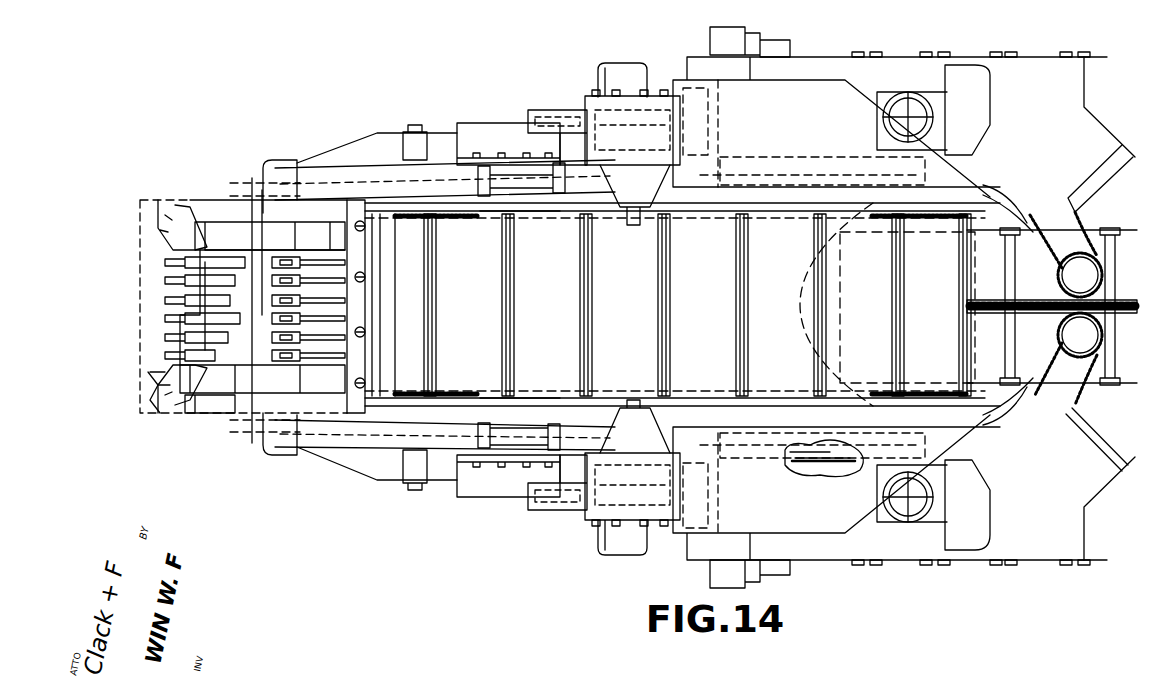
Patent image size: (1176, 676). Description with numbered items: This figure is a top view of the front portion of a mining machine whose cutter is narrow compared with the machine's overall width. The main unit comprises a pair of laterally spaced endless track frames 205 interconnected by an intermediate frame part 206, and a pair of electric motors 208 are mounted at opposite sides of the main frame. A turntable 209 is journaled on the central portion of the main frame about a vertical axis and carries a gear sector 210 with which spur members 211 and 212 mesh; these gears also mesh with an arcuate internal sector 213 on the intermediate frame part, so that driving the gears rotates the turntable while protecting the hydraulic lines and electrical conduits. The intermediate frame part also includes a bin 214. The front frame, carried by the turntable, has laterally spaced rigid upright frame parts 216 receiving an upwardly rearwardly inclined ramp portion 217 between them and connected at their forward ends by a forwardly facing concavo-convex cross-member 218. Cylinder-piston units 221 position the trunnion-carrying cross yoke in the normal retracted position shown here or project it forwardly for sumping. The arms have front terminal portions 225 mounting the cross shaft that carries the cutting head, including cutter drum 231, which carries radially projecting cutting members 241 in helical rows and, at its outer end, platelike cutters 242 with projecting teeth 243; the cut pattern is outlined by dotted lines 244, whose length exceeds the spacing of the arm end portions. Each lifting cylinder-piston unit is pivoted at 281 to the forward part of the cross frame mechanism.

The endless track frames 205 is at (1028, 65).
The intermediate frame part 206 is at (1073, 440).
The electric motors 208 is at (820, 76).
The turntable 209 is at (1030, 250).
The gear sector 210 is at (1048, 388).
The spur member 211 is at (1088, 342).
The spur member 212 is at (1088, 273).
The arcuate internal sector 213 is at (1087, 216).
The bin 214 is at (993, 218).
The upright frame parts 216 is at (533, 202).
The ramp portion 217 is at (563, 317).
The concavo-convex cross-member 218 is at (385, 305).
The cylinder-piston units 221 is at (825, 468).
The front terminal portions 225 is at (200, 400).
The cutter drum 231 is at (205, 290).
The cutting members 241 is at (165, 282).
The platelike cutters 242 is at (180, 214).
The projecting teeth 243 is at (158, 396).
The dotted lines 244 is at (140, 228).
The pivot 281 is at (489, 130).